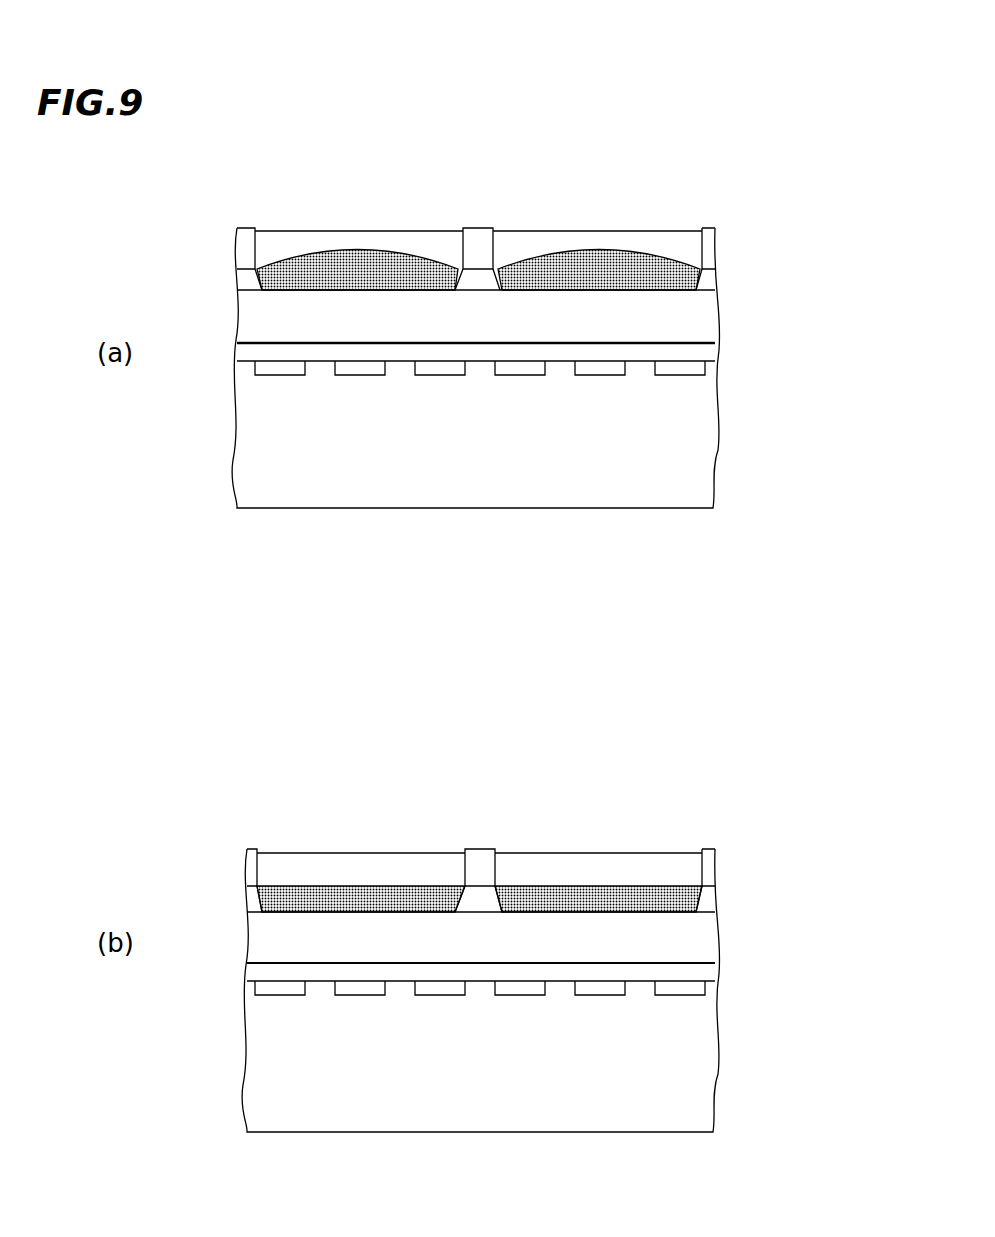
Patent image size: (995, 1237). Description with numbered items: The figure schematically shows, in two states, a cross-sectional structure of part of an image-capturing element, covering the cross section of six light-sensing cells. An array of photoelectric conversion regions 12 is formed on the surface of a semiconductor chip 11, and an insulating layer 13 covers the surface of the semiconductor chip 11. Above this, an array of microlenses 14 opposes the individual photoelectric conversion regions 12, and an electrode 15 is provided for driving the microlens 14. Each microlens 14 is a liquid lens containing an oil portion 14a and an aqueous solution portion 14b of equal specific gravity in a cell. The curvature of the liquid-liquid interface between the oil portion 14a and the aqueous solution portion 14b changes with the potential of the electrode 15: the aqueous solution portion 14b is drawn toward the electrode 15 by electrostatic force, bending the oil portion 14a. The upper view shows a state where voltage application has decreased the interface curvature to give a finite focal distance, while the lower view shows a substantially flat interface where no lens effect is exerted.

The semiconductor chip 11 is at (698, 470).
The photoelectric conversion regions 12 is at (602, 375).
The insulating layer 13 is at (697, 327).
The microlens 14 is at (487, 486).
The oil portion 14a is at (330, 280).
The aqueous solution portion 14b is at (332, 148).
The electrode 15 is at (702, 282).